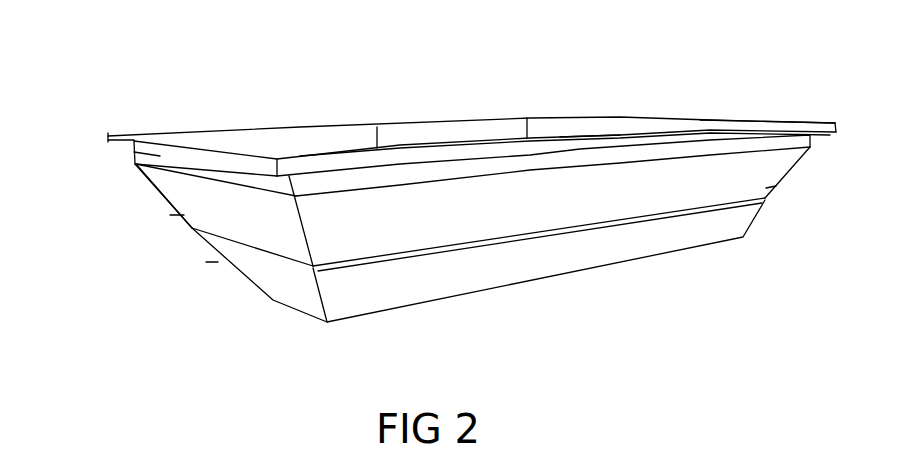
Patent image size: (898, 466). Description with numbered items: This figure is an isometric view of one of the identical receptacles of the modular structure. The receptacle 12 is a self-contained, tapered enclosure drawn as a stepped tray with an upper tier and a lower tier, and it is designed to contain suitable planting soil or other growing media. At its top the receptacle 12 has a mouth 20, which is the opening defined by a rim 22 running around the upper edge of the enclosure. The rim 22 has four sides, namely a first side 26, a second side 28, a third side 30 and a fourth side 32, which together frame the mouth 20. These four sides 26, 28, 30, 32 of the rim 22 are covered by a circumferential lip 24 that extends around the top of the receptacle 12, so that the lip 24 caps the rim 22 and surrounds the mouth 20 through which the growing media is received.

The receptacle 12 is at (571, 291).
The mouth 20 is at (447, 135).
The rim 22 is at (127, 150).
The circumferential lip 24 is at (110, 137).
The side 26 is at (354, 124).
The side 28 is at (693, 118).
The side 30 is at (583, 137).
The side 32 is at (187, 150).